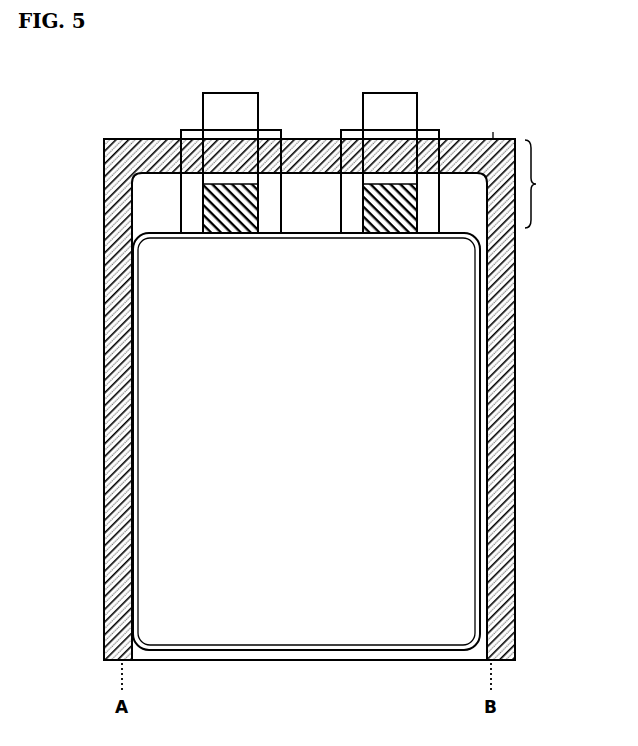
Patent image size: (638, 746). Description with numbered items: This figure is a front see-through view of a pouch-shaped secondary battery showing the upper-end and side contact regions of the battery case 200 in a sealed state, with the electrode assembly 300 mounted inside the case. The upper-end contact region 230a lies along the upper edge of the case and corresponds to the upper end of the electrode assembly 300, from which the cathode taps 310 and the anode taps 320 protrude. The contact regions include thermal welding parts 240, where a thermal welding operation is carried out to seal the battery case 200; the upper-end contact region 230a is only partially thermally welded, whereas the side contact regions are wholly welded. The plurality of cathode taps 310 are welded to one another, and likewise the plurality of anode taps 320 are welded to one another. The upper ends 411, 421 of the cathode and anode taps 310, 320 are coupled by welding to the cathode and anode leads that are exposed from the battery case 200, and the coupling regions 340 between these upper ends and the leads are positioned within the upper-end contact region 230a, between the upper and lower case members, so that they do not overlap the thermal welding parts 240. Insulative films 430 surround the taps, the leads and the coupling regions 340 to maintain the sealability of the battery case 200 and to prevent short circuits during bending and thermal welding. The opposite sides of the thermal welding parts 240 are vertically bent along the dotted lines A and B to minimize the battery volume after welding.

The battery case 200 is at (515, 433).
The thermal welding parts 240 is at (104, 141).
The electrode assembly 300 is at (479, 493).
The cathode taps 310 is at (150, 227).
The anode taps 320 is at (483, 245).
The coupling regions 340 is at (203, 192).
The upper end of cathode taps 411 is at (227, 93).
The upper end of anode taps 421 is at (393, 93).
The insulative films 430 is at (427, 130).
The upper-end contact region 230a is at (540, 180).